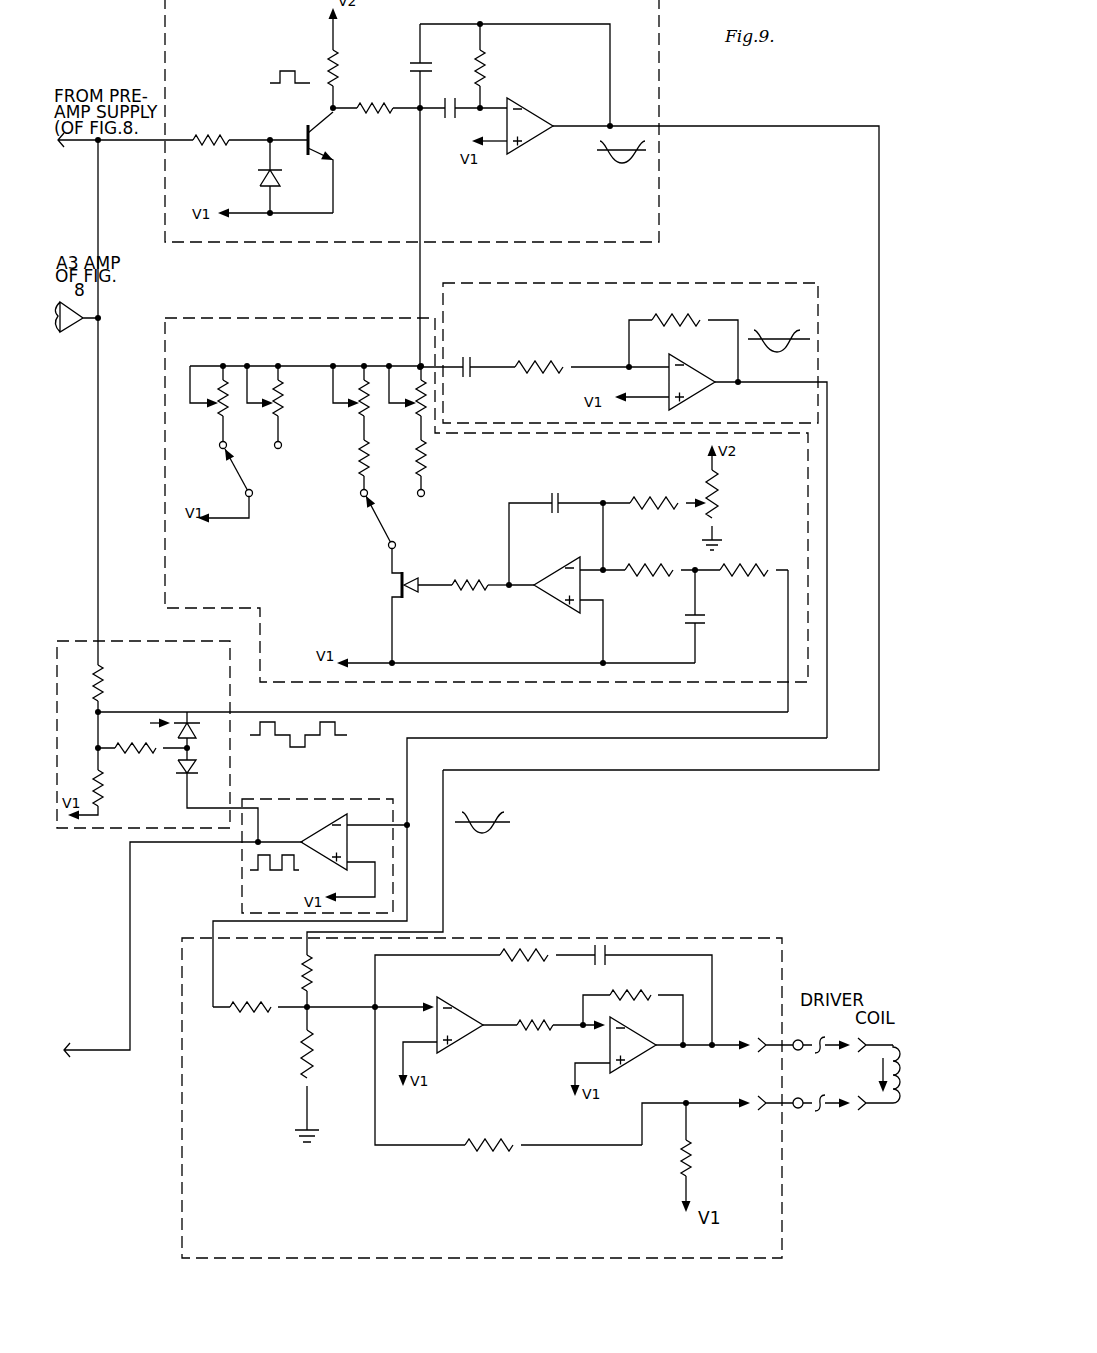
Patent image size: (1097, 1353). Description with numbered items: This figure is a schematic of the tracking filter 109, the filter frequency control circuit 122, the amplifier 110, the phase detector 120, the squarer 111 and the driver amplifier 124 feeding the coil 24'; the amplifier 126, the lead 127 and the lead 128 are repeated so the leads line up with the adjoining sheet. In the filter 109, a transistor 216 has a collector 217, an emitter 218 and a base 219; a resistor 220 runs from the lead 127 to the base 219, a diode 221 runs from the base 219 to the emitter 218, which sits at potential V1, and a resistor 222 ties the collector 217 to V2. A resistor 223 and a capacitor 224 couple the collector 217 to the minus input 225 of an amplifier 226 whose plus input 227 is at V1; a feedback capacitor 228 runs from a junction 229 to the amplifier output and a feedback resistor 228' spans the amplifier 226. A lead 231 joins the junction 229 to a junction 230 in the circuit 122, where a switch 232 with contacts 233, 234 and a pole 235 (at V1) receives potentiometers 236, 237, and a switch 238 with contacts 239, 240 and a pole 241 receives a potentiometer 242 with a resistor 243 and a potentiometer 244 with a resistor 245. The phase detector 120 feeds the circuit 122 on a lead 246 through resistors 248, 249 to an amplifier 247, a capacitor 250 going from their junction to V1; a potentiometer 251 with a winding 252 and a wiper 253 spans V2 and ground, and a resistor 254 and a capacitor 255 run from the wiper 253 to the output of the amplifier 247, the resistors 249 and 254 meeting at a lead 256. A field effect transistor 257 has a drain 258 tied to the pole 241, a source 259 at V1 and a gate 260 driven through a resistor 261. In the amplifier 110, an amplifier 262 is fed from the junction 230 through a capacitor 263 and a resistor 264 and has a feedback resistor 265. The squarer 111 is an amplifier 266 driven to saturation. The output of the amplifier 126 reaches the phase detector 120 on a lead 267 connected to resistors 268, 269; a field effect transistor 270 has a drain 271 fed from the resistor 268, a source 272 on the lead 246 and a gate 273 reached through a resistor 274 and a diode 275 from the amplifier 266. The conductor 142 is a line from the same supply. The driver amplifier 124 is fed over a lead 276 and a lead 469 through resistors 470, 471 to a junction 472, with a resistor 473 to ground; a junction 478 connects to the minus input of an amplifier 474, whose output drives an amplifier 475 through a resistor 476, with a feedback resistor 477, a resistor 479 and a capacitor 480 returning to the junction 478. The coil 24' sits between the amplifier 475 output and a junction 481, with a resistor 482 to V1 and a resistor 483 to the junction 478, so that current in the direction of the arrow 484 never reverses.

The tracking filter 109 is at (668, 172).
The amplifier 110 is at (776, 280).
The squarer 111 is at (318, 795).
The phase detector 120 is at (148, 639).
The circuit 122 is at (264, 314).
The driver amplifier 124 is at (368, 1266).
The amplifier 126 is at (70, 332).
The lead 127 is at (89, 145).
The lead 128 is at (120, 1067).
The conductor 142 is at (101, 229).
The transistor 216 is at (296, 126).
The collector 217 is at (338, 117).
The emitter 218 is at (336, 160).
The base 219 is at (284, 145).
The resistor 220 is at (218, 149).
The diode 221 is at (260, 175).
The resistor 222 is at (340, 64).
The resistor 223 is at (389, 107).
The capacitor 224 is at (463, 102).
The minus input 225 is at (510, 104).
The amplifier 226 is at (546, 148).
The plus input 227 is at (508, 145).
The feedback capacitor 228 is at (437, 66).
The feedback resistor 228' is at (506, 66).
The junction 229 is at (421, 111).
The junction 230 is at (417, 363).
The lead 231 is at (420, 230).
The single-pole, double-throw switch 232 is at (274, 500).
The contact 233 is at (217, 449).
The contact 234 is at (284, 450).
The pole 235 is at (245, 471).
The potentiometer 236 is at (225, 415).
The potentiometer 237 is at (281, 414).
The single-pole, double-throw switch 238 is at (370, 526).
The contact 239 is at (366, 494).
The contact 240 is at (425, 497).
The pole 241 is at (386, 529).
The potentiometer 242 is at (365, 412).
The resistor 243 is at (368, 451).
The potentiometer 244 is at (424, 430).
The resistor 245 is at (425, 461).
The lead 246 is at (787, 651).
The amplifier 247 is at (558, 564).
The resistor 248 is at (740, 566).
The resistor 249 is at (646, 566).
The capacitor 250 is at (705, 616).
The potentiometer 251 is at (735, 508).
The winding 252 is at (716, 475).
The wiper 253 is at (690, 500).
The resistor 254 is at (650, 496).
The capacitor 255 is at (583, 478).
The lead 256 is at (604, 518).
The field effect transistor 257 is at (415, 607).
The drain 258 is at (404, 572).
The source 259 is at (396, 598).
The gate 260 is at (420, 580).
The resistor 261 is at (470, 589).
The amplifier 262 is at (703, 390).
The capacitor 263 is at (463, 361).
The resistor 264 is at (538, 363).
The feedback resistor 265 is at (694, 316).
The amplifier 266 is at (314, 834).
The lead 267 is at (94, 598).
The resistor 268 is at (103, 678).
The resistor 269 is at (103, 788).
The field effect transistor 270 is at (137, 728).
The drain 271 is at (185, 720).
The source 272 is at (205, 715).
The gate 273 is at (190, 748).
The resistor 274 is at (127, 753).
The diode 275 is at (197, 770).
The lead 276 is at (215, 921).
The lead 469 is at (446, 918).
The resistor 470 is at (281, 984).
The resistor 471 is at (316, 982).
The junction 472 is at (303, 1012).
The resistor 473 is at (305, 1074).
The amplifier 474 is at (465, 1004).
The amplifier 475 is at (641, 1066).
The resistor 476 is at (543, 1032).
The resistor 477 is at (626, 998).
The junction 478 is at (385, 1006).
The resistor 479 is at (510, 962).
The capacitor 480 is at (609, 964).
The junction 481 is at (687, 1115).
The resistor 482 is at (673, 1171).
The resistor 483 is at (513, 1151).
The arrow 484 is at (872, 1075).
The coil 24' is at (896, 1100).